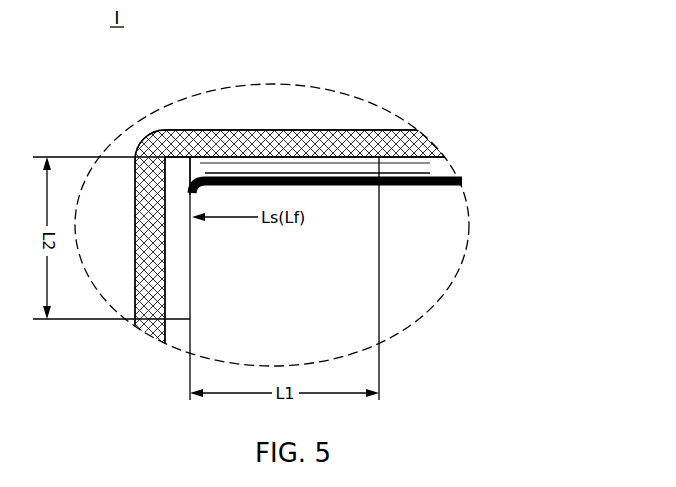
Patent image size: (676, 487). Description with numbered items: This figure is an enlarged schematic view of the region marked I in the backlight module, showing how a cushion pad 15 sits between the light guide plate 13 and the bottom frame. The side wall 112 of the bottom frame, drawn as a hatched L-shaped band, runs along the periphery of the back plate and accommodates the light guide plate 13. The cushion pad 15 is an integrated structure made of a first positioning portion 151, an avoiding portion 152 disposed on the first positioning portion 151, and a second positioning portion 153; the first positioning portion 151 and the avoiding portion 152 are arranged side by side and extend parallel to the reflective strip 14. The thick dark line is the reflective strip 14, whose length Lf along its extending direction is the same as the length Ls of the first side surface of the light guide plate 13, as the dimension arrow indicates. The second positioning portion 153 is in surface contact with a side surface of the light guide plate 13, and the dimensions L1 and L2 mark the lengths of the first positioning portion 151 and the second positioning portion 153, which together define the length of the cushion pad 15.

The light guide plate 13 is at (424, 263).
The reflective strip 14 is at (421, 187).
The cushion pad 15 is at (363, 43).
The first positioning portion 151 is at (291, 170).
The avoiding portion 152 is at (243, 160).
The second positioning portion 153 is at (189, 224).
The side wall 112 is at (405, 146).